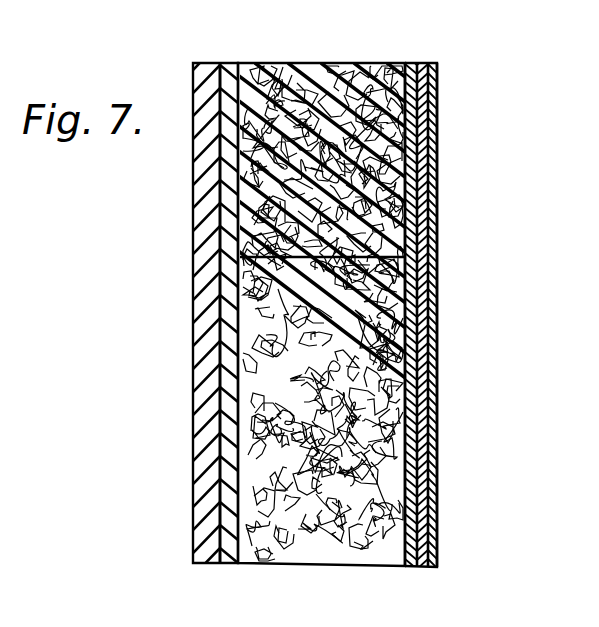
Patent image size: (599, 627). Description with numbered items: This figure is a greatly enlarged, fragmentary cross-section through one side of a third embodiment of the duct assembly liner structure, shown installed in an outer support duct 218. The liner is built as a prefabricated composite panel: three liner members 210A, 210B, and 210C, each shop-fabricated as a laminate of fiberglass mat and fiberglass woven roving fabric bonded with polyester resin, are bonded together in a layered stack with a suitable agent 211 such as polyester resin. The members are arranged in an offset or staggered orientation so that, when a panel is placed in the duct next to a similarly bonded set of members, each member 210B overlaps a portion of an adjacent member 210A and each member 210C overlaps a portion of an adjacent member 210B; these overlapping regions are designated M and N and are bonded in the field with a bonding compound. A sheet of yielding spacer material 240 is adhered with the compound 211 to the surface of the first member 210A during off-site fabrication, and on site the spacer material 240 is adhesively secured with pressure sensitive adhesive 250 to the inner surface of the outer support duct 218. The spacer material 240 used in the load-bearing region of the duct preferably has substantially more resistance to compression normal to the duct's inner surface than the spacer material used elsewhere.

The outer support duct 218 is at (188, 250).
The pressure sensitive adhesive 250 is at (218, 196).
The spacer material 240 is at (300, 65).
The first liner member 210A is at (410, 63).
The second liner member 210B is at (423, 63).
The third liner member 210C is at (439, 76).
The bonding agent 211 is at (434, 288).
The overlapping region M is at (438, 258).
The overlapping region N is at (438, 331).